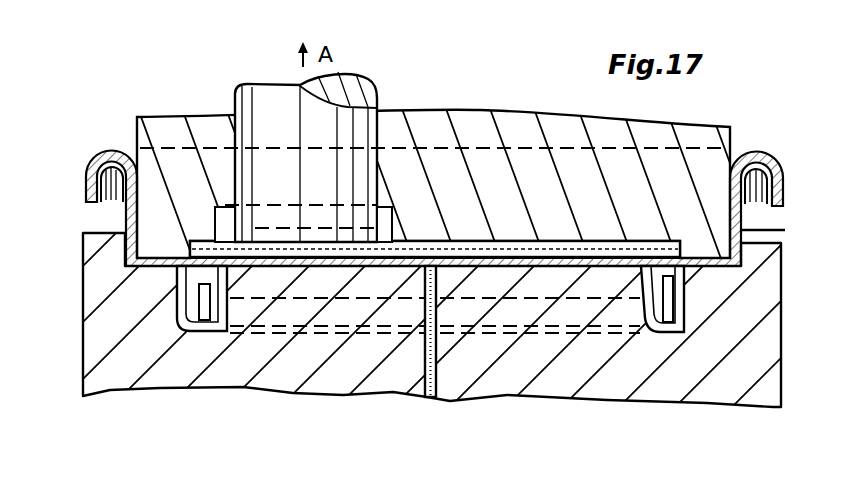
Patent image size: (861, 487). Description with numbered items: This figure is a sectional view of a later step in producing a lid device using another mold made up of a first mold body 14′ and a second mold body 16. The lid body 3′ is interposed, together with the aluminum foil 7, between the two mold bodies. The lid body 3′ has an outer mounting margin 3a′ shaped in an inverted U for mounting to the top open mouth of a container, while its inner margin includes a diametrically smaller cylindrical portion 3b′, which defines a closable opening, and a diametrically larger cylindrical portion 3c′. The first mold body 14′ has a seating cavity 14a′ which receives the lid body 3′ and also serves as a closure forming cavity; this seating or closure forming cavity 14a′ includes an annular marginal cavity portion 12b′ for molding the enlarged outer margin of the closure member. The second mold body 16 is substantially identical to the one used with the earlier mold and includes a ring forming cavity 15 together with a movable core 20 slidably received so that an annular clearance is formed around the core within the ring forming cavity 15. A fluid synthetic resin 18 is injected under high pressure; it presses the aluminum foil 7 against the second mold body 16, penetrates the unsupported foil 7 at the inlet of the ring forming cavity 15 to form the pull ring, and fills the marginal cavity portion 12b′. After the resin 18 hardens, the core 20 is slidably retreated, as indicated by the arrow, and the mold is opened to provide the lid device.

The lid body 3′ is at (115, 253).
The outer mounting margin 3a′ is at (111, 150).
The diametrically smaller cylindrical portion 3b′ is at (202, 276).
The diametrically larger cylindrical portion 3c′ is at (203, 303).
The aluminum foil 7 is at (338, 258).
The annular marginal cavity portion 12b′ is at (668, 332).
The first mold body 14′ is at (100, 352).
The seating cavity 14a′ is at (786, 208).
The ring forming cavity 15 is at (224, 207).
The second mold body 16 is at (487, 133).
The fluid synthetic resin 18 is at (428, 400).
The movable core 20 is at (272, 108).